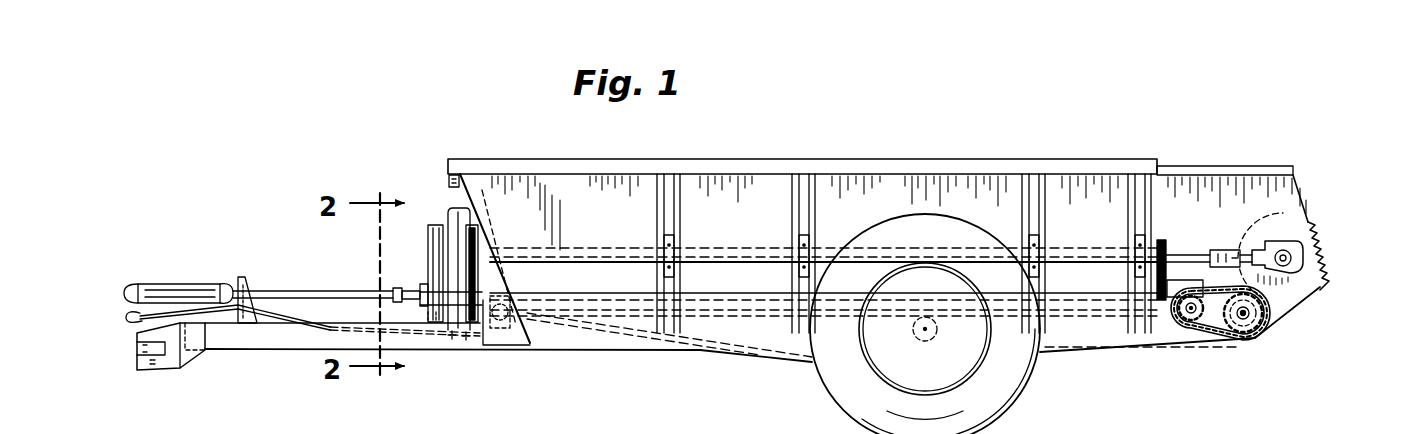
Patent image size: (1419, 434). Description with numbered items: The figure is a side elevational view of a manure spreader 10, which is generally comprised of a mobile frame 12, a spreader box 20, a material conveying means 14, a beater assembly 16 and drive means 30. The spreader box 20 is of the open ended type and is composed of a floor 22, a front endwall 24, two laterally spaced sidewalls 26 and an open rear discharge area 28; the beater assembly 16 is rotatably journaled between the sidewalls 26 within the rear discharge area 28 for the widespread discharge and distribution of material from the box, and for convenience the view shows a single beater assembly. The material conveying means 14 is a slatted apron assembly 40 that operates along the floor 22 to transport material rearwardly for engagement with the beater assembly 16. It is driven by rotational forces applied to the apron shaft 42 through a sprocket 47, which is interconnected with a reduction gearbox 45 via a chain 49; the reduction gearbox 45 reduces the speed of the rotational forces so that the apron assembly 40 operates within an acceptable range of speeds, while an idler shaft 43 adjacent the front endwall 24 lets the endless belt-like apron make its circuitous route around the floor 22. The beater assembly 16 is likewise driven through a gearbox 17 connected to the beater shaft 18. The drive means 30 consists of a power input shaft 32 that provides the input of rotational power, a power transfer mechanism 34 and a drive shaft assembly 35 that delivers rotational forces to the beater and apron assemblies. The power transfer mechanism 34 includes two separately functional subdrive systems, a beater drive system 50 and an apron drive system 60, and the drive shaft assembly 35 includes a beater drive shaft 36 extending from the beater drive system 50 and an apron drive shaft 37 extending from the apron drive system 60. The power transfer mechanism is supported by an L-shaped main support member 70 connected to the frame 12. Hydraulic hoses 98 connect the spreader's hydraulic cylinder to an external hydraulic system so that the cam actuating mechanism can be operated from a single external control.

The manure spreader 10 is at (345, 102).
The mobile frame 12 is at (744, 369).
The material conveying means 14 is at (565, 296).
The beater assembly 16 is at (1323, 262).
The gearbox 17 is at (1279, 240).
The beater shaft 18 is at (1286, 264).
The spreader box 20 is at (923, 157).
The floor 22 is at (715, 316).
The front endwall 24 is at (487, 213).
The sidewalls 26 is at (887, 218).
The rear discharge area 28 is at (1316, 191).
The drive means 30 is at (364, 258).
The power input shaft 32 is at (318, 290).
The power transfer mechanism 34 is at (437, 197).
The drive shaft assembly 35 is at (627, 246).
The beater drive shaft 36 is at (1191, 254).
The apron drive shaft 37 is at (1113, 246).
The apron assembly 40 is at (806, 361).
The apron shaft 42 is at (1242, 320).
The idler shaft 43 is at (515, 346).
The reduction gearbox 45 is at (1204, 312).
The sprocket 47 is at (1248, 327).
The chain 49 is at (1266, 316).
The beater drive system 50 is at (437, 323).
The apron drive system 60 is at (471, 323).
The main support member 70 is at (447, 219).
The hydraulic hoses 98 is at (131, 316).